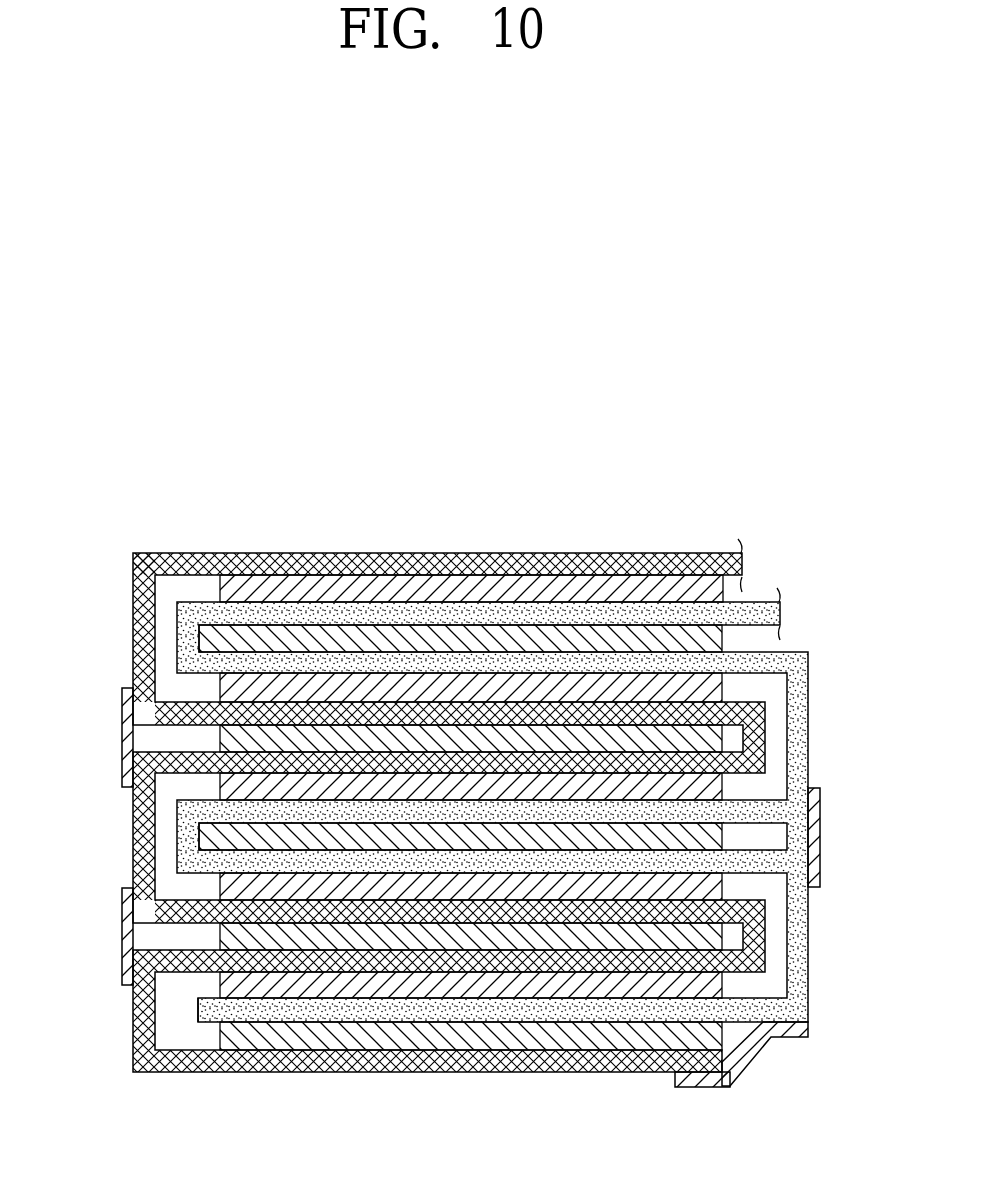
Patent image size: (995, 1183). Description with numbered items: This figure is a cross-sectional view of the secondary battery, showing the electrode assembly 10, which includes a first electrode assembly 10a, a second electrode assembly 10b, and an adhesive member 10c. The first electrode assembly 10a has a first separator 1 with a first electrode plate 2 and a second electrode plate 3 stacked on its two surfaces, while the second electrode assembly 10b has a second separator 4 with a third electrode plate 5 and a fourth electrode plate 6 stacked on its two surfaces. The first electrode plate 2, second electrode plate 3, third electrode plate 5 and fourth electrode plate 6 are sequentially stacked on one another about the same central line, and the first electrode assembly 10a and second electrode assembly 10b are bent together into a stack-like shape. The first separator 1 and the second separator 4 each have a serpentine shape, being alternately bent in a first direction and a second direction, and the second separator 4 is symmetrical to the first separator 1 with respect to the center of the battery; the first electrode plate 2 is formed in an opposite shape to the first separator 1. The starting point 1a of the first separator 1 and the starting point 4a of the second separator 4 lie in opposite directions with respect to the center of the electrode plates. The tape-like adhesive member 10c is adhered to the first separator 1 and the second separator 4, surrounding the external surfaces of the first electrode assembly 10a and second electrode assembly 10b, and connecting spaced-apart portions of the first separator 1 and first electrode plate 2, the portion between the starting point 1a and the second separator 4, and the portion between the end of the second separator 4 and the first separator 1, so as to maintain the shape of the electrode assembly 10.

The electrode assembly 10 is at (440, 468).
The first electrode assembly 10a is at (385, 808).
The second electrode assembly 10b is at (552, 851).
The adhesive member 10c is at (122, 773).
The first separator 1 is at (140, 643).
The starting point of the first separator 1a is at (715, 1063).
The first electrode plate 2 is at (235, 748).
The second electrode plate 3 is at (235, 690).
The second separator 4 is at (767, 612).
The starting point of the second separator 4a is at (198, 1008).
The third electrode plate 5 is at (716, 638).
The fourth electrode plate 6 is at (713, 590).